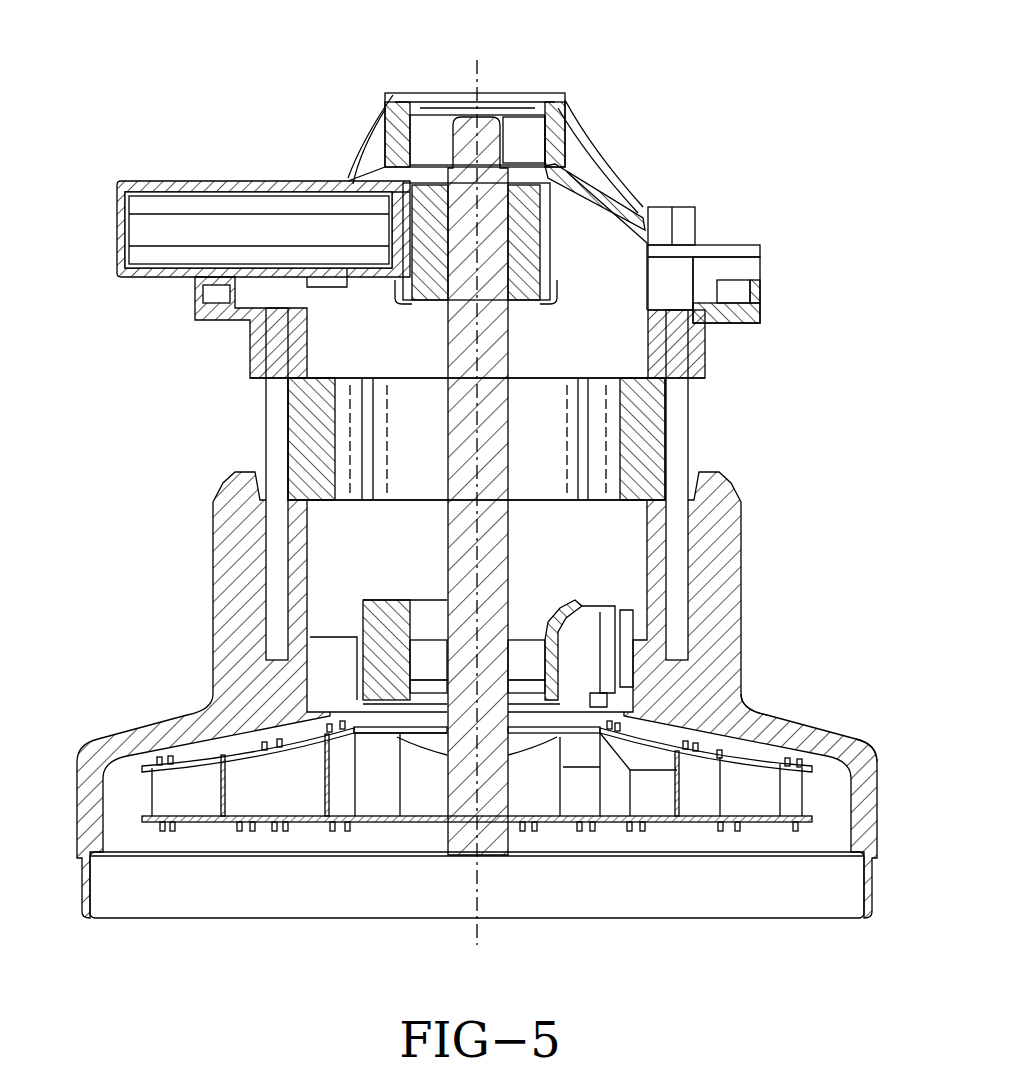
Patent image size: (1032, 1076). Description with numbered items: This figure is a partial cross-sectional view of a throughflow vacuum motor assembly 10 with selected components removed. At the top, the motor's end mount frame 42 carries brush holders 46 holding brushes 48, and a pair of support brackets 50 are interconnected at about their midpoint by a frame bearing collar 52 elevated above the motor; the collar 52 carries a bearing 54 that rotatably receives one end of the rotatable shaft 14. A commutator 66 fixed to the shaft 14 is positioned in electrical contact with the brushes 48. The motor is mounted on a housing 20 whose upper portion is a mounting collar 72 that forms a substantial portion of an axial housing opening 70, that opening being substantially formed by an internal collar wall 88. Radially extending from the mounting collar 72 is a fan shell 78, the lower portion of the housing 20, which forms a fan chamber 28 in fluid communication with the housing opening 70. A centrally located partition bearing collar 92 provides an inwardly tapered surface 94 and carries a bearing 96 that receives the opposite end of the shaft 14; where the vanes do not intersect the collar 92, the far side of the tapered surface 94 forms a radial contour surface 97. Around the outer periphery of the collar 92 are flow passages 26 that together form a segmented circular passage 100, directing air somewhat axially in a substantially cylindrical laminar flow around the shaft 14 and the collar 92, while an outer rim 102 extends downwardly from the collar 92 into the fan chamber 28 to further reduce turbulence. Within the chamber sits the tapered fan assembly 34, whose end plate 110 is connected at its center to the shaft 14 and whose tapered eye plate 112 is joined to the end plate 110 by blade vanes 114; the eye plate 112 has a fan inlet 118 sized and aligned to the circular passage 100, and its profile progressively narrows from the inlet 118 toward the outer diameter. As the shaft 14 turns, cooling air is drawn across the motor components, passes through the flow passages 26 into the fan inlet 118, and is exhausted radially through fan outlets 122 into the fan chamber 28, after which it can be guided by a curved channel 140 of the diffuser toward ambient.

The throughflow vacuum motor assembly 10 is at (792, 102).
The rotatable shaft 14 is at (462, 352).
The housing 20 is at (772, 666).
The flow passages 26 is at (341, 676).
The fan chamber 28 is at (750, 750).
The tapered fan assembly 34 is at (652, 735).
The end mount frame 42 is at (722, 230).
The brush holder 46 is at (247, 186).
The brush 48 is at (181, 235).
The support brackets 50 is at (596, 178).
The frame bearing collar 52 is at (430, 95).
The bearing 54 is at (527, 140).
The commutator 66 is at (528, 237).
The housing opening 70 is at (551, 538).
The mounting collar 72 is at (744, 508).
The fan shell 78 is at (848, 745).
The internal collar wall 88 is at (312, 562).
The partition bearing collar 92 is at (584, 615).
The inwardly tapered surface 94 is at (560, 625).
The bearing 96 is at (440, 660).
The radial contour surface 97 is at (592, 636).
The segmented circular passage 100 is at (578, 690).
The outer rim 102 is at (522, 734).
The end plate 110 is at (765, 820).
The tapered eye plate 112 is at (208, 758).
The blade vanes 114 is at (253, 798).
The fan inlet 118 is at (362, 724).
The fan outlets 122 is at (134, 789).
The curved channel 140 is at (374, 796).